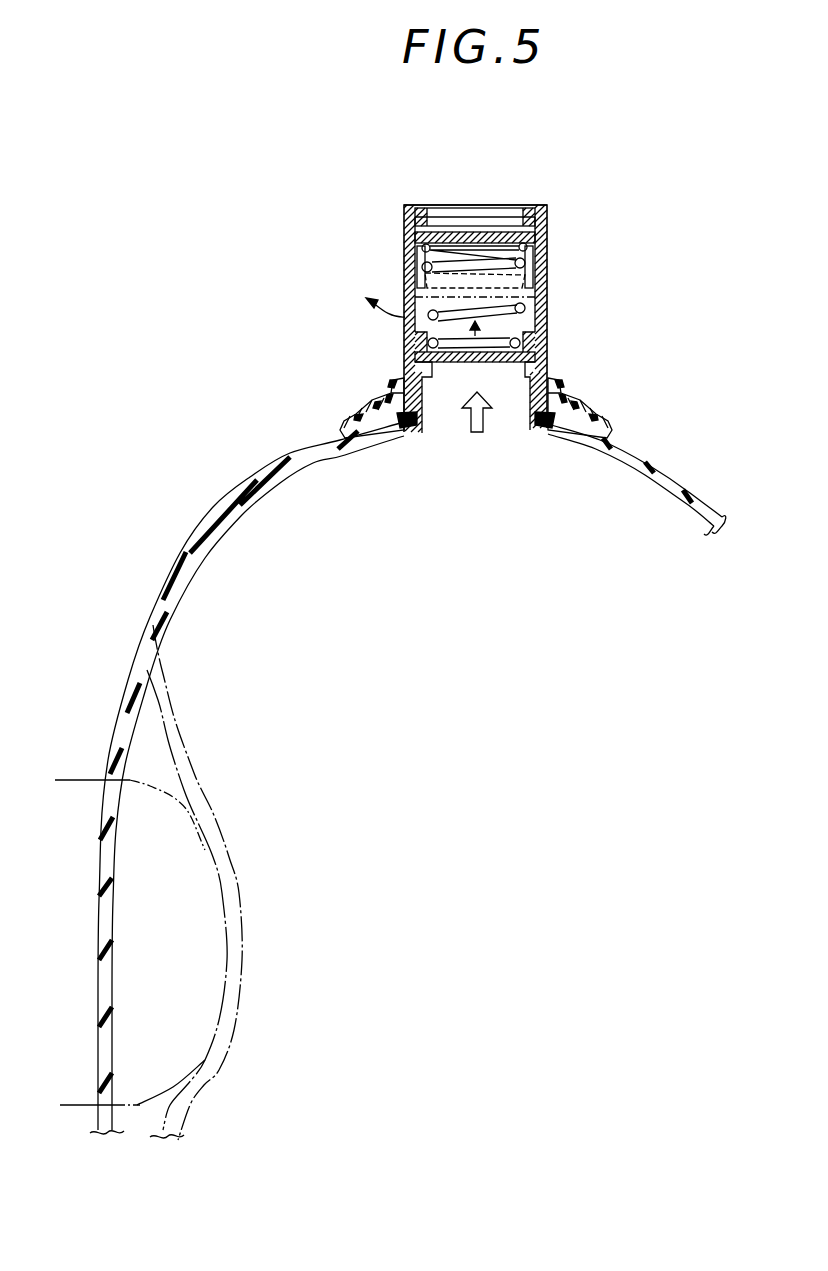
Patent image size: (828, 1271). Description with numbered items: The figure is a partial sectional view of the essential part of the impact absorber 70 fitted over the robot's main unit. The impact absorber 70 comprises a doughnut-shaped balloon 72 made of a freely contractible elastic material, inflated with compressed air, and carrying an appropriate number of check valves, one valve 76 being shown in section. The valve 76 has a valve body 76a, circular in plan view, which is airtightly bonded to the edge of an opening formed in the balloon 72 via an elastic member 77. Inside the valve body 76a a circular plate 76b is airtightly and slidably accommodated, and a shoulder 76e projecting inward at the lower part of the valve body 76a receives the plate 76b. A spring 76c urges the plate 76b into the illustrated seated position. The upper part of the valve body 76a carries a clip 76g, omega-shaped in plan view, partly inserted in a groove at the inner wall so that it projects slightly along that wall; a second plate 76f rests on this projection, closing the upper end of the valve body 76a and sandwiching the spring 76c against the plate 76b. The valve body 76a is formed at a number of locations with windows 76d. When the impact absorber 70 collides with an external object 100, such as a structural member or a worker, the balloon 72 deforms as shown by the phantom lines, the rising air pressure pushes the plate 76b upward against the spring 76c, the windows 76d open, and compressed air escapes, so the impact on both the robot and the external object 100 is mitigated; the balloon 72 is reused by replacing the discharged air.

The impact absorber 70 is at (612, 308).
The balloon 72 is at (632, 458).
The valve 76 is at (562, 200).
The valve body 76a is at (404, 253).
The plate 76b is at (487, 364).
The spring 76c is at (546, 304).
The windows 76d is at (404, 328).
The shoulder 76e is at (424, 364).
The second plate 76f is at (495, 232).
The clip 76g is at (421, 214).
The elastic member 77 is at (352, 418).
The external object 100 is at (88, 778).